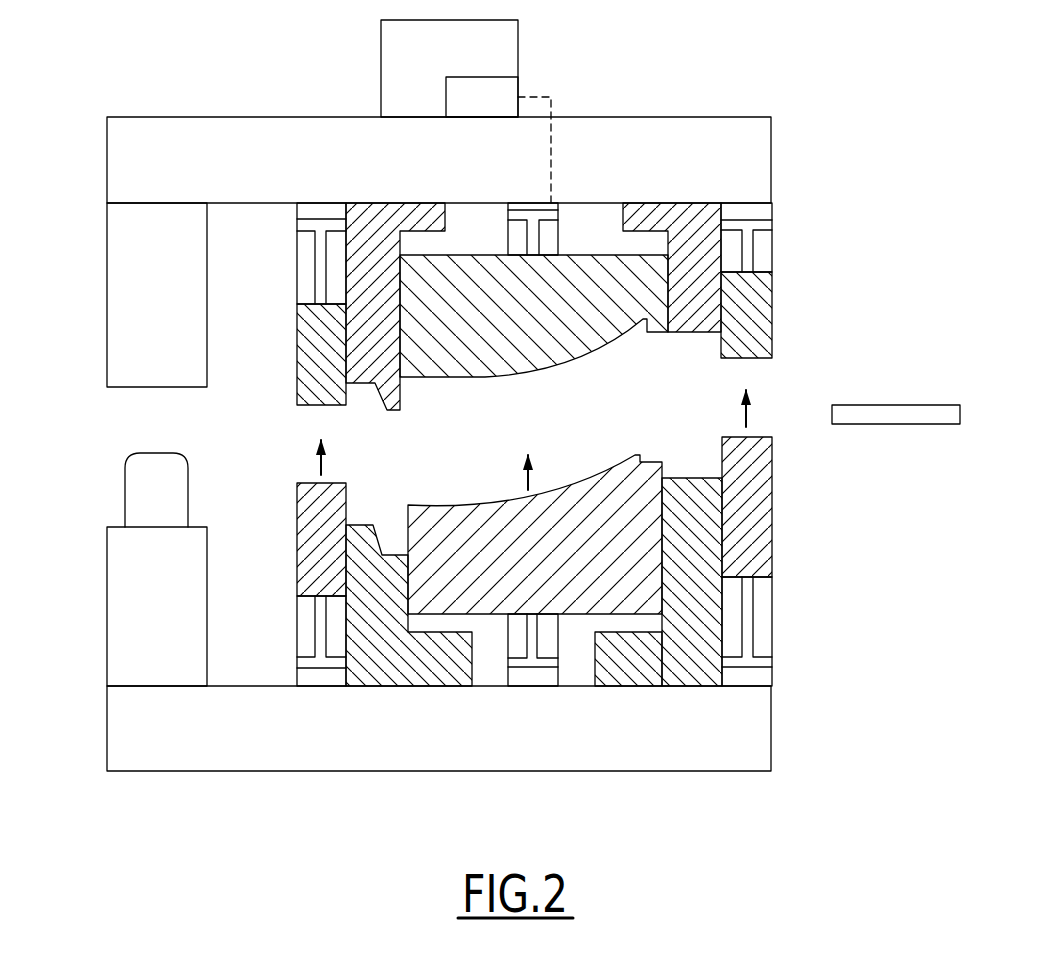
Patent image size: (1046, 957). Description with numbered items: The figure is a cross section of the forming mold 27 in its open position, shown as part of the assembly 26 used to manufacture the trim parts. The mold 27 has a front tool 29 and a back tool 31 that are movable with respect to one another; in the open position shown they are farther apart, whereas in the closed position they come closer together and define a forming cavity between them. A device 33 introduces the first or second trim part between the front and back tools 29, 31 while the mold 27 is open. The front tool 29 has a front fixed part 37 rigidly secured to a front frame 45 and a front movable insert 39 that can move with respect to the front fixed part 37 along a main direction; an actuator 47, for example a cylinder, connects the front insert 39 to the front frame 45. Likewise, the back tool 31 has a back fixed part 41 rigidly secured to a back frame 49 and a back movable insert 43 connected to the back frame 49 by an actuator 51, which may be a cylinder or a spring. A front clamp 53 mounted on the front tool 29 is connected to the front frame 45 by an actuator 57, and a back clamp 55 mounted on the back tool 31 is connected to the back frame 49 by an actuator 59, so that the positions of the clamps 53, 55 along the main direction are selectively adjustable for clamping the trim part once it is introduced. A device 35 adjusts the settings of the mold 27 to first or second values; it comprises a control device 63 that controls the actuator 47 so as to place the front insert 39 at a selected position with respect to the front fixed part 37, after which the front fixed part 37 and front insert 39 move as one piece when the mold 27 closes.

The assembly 26 is at (82, 360).
The forming mold 27 is at (82, 570).
The front tool 29 is at (479, 231).
The back tool 31 is at (521, 622).
The device for introducing the trim parts 33 is at (883, 372).
The device adjusting settings of the forming mold 35 is at (449, 68).
The front fixed part 37 is at (697, 307).
The front movable insert 39 is at (565, 308).
The back fixed part 41 is at (703, 515).
The back movable insert 43 is at (613, 525).
The front frame 45 is at (686, 143).
The actuator 47 is at (552, 237).
The back frame 49 is at (717, 737).
The actuator 51 is at (517, 637).
The front clamp 53 is at (308, 348).
The back clamp 55 is at (320, 523).
The actuator 57 is at (308, 267).
The actuator 59 is at (307, 635).
The control device 63 is at (498, 140).